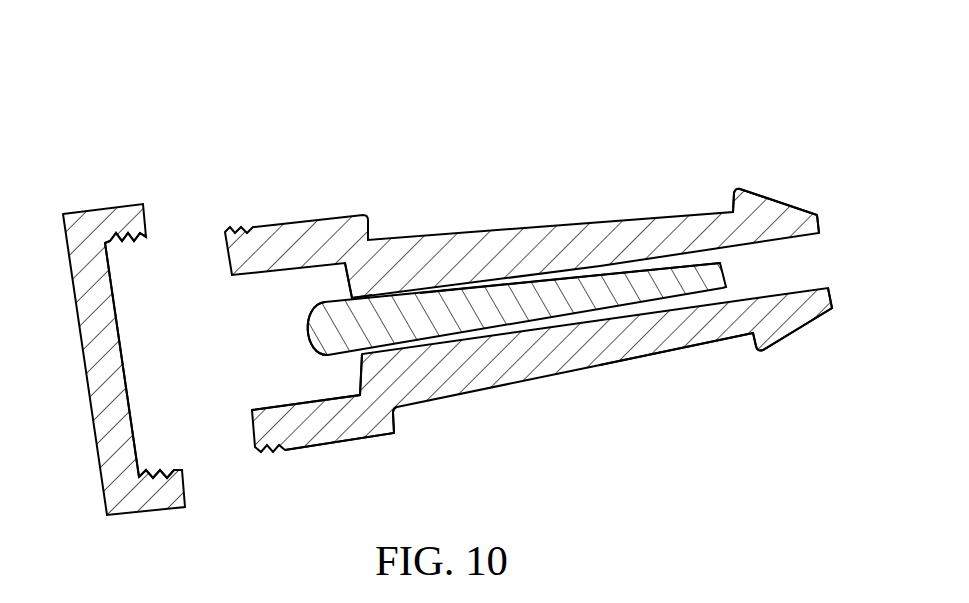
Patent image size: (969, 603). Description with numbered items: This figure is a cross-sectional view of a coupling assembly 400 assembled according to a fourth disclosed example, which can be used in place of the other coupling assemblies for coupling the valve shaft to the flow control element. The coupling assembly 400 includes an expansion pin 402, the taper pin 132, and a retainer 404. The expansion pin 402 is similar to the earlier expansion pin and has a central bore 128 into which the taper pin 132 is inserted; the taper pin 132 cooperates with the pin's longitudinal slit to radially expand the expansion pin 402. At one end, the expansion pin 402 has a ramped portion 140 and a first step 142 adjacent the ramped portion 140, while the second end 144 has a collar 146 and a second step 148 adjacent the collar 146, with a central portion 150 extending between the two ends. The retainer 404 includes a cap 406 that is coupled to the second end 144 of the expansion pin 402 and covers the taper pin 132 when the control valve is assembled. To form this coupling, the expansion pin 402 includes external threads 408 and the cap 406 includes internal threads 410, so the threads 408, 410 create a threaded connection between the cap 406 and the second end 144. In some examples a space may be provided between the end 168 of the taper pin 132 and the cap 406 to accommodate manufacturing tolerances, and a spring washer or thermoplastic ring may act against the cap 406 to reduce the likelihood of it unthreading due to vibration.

The coupling assembly 400 is at (663, 64).
The central bore 128 is at (577, 278).
The taper pin 132 is at (327, 352).
The ramped portion 140 is at (772, 217).
The first step 142 is at (753, 347).
The second end 144 is at (522, 222).
The collar 146 is at (352, 232).
The second step 148 is at (397, 409).
The central portion 150 is at (627, 342).
The end 168 is at (480, 279).
The expansion pin 402 is at (542, 370).
The retainer 404 is at (209, 359).
The cap 406 is at (110, 395).
The external threads 408 is at (280, 448).
The internal threads 410 is at (145, 238).